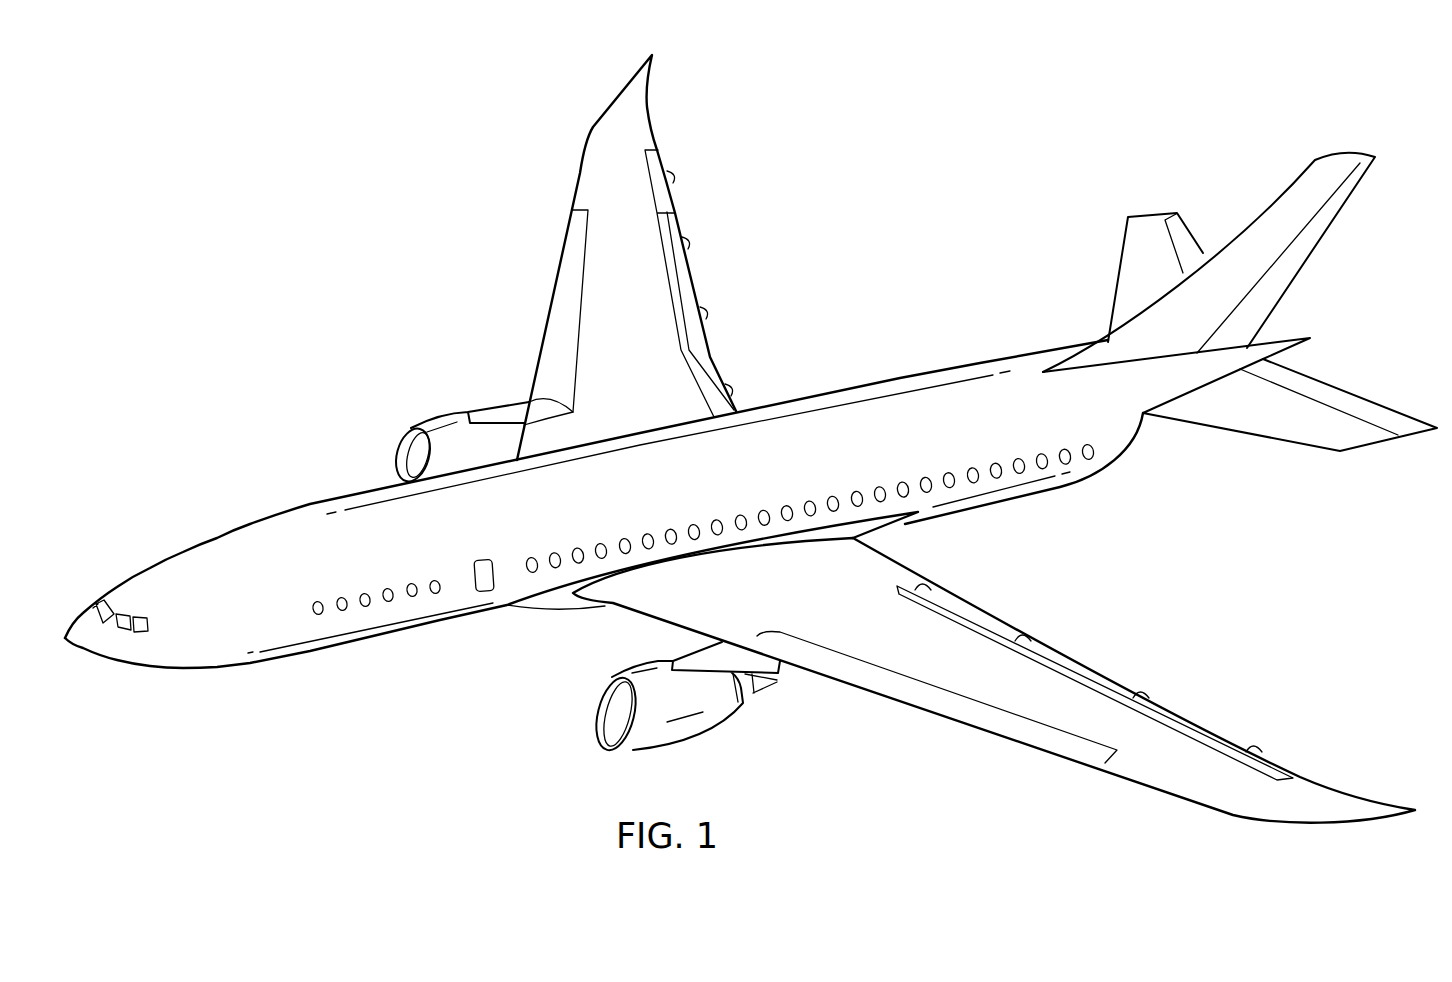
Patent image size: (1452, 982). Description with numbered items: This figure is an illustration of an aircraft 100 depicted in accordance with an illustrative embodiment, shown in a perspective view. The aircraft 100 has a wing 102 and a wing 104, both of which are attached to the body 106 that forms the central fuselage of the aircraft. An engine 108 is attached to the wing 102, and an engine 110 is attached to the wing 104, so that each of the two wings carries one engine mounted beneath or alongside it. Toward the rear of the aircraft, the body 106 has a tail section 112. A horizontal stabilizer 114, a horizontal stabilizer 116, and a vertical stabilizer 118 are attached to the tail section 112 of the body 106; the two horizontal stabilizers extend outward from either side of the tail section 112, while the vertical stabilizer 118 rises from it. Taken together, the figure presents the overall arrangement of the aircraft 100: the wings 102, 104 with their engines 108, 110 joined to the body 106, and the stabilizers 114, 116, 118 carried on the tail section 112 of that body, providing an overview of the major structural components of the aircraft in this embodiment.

The aircraft 100 is at (340, 206).
The wing 102 is at (586, 147).
The wing 104 is at (1293, 823).
The body 106 is at (252, 518).
The engine 108 is at (442, 410).
The engine 110 is at (687, 742).
The tail section 112 is at (1183, 490).
The horizontal stabilizer 114 is at (1117, 273).
The horizontal stabilizer 116 is at (1292, 442).
The vertical stabilizer 118 is at (1320, 243).